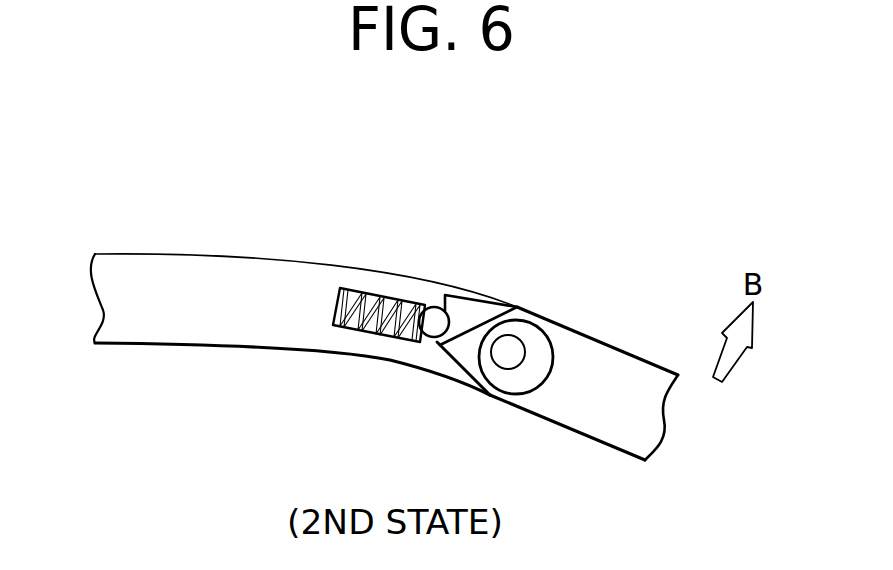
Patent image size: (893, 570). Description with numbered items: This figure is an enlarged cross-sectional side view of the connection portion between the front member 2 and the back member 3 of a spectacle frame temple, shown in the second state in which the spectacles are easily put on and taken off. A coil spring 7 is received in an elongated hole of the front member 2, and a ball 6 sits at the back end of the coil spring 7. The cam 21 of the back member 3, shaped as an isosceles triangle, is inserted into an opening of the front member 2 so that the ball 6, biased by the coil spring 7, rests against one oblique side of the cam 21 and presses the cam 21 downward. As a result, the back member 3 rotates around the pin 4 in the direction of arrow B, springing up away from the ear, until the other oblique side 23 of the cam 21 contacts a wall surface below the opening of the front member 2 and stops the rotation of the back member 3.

The front member 2 is at (182, 268).
The back member 3 is at (625, 370).
The pin 4 is at (510, 352).
The ball 6 is at (430, 313).
The coil spring 7 is at (363, 290).
The cam 21 is at (530, 327).
The other oblique side 23 is at (450, 378).